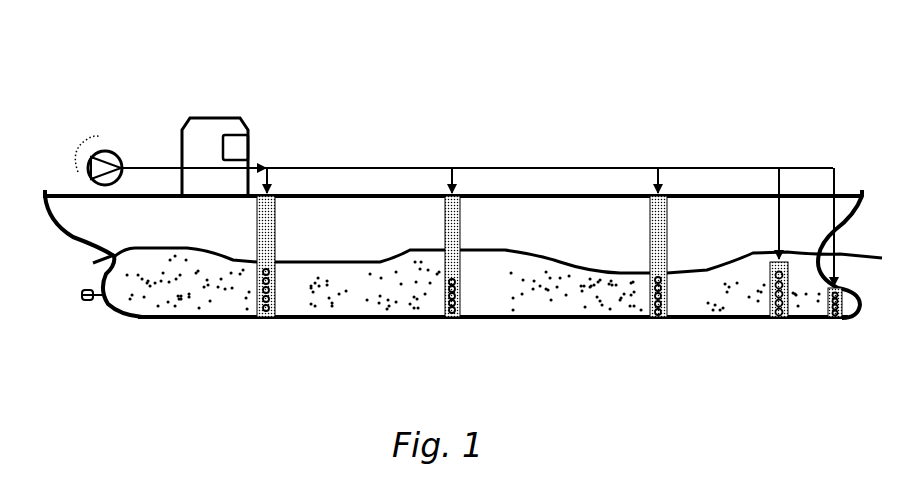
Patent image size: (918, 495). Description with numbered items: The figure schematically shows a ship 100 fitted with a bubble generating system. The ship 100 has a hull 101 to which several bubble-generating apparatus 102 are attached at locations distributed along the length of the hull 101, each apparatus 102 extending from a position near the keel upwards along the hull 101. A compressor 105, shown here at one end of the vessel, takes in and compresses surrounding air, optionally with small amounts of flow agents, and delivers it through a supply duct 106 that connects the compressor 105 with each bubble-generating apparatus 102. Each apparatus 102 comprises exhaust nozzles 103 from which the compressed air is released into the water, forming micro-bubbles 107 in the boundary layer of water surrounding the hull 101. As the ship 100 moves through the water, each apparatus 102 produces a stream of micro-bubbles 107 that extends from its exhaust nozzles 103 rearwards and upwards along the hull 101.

The ship 100 is at (519, 100).
The hull 101 is at (325, 227).
The bubble-generating apparatus 102 is at (778, 260).
The exhaust nozzles 103 is at (257, 315).
The compressor 105 is at (110, 152).
The supply duct 106 is at (567, 167).
The micro-bubbles 107 is at (83, 328).